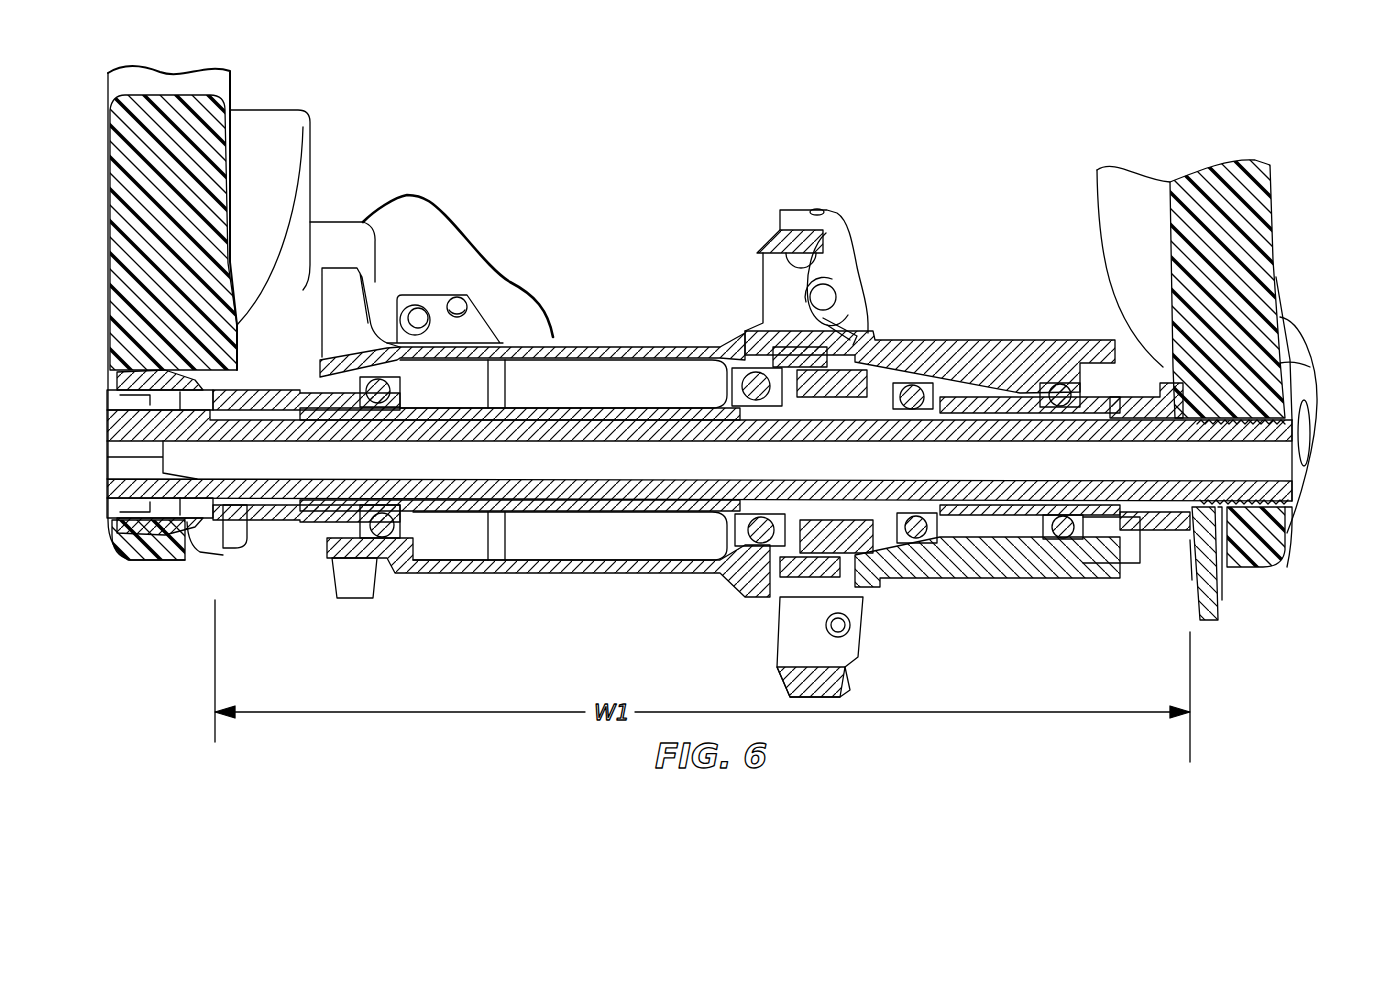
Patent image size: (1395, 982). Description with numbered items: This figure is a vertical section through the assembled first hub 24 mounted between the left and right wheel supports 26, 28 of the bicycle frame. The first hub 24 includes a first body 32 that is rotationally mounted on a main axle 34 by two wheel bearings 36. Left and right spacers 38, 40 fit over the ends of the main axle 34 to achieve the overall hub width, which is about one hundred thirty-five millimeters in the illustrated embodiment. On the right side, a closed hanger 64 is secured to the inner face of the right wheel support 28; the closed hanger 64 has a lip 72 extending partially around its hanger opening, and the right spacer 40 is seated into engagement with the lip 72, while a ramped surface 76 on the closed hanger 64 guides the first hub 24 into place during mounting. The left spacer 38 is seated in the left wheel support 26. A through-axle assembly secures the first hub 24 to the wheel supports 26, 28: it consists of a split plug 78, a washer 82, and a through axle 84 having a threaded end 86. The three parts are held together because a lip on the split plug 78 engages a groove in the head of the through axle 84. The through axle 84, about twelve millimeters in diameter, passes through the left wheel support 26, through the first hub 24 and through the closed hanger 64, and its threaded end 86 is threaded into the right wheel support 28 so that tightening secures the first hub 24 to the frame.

The first hub 24 is at (633, 255).
The left wheel support 26 is at (108, 355).
The right wheel support 28 is at (1283, 367).
The first body 32 is at (641, 346).
The main axle 34 is at (563, 410).
The wheel bearings 36 is at (380, 545).
The left spacer 38 is at (292, 522).
The right spacer 40 is at (1157, 535).
The closed hanger 64 is at (1222, 575).
The lip 72 is at (1157, 372).
The ramped surface 76 is at (1190, 580).
The split plug 78 is at (114, 524).
The washer 82 is at (147, 505).
The through axle 84 is at (633, 495).
The threaded end 86 is at (1283, 500).